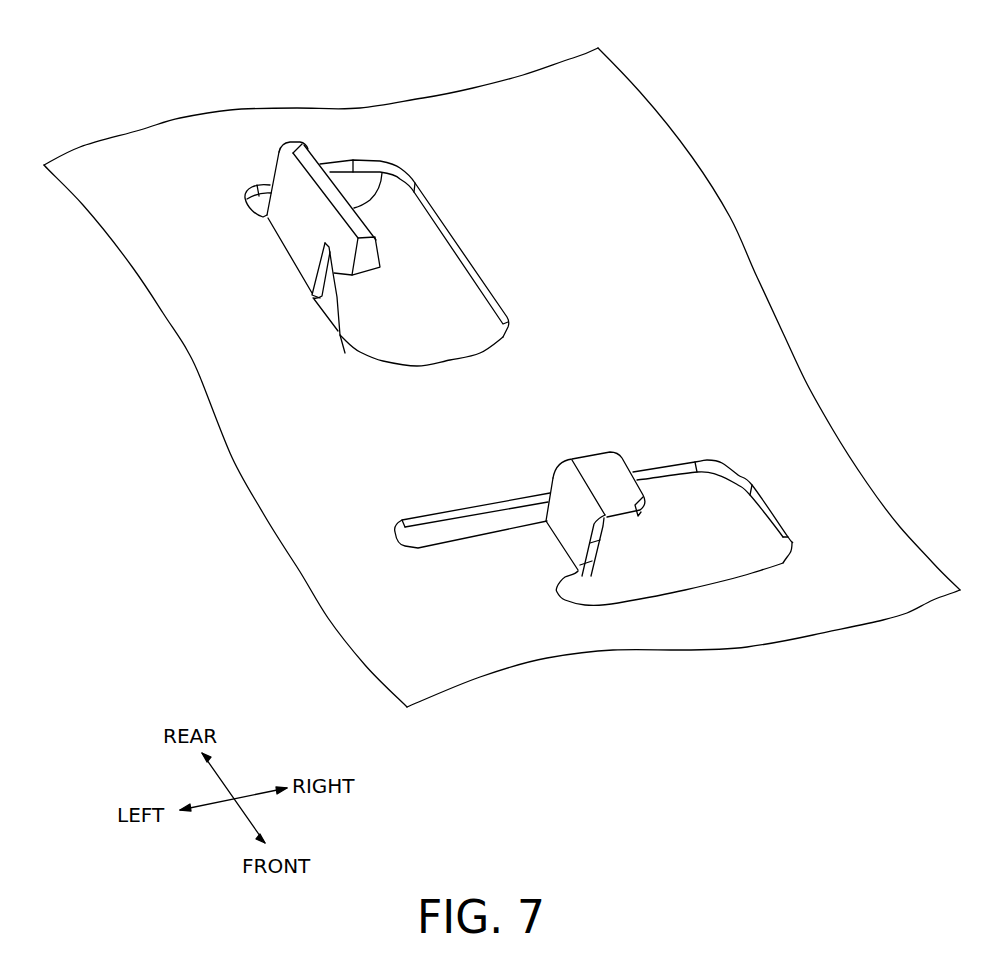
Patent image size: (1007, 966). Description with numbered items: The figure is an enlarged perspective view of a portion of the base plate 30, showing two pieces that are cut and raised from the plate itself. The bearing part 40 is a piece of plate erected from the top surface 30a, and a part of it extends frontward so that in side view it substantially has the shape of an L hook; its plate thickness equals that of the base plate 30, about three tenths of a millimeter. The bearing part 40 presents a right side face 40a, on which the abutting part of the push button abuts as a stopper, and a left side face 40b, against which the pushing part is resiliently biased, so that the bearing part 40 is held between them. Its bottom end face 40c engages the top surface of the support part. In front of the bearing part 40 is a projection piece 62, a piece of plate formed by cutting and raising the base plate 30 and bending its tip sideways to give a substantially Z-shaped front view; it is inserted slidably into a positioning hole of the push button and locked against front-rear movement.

The base plate 30 is at (502, 365).
The top surface 30a is at (595, 139).
The bearing part 40 is at (231, 196).
The right side face 40a is at (383, 161).
The left side face 40b is at (305, 230).
The bottom end face 40c is at (337, 332).
The projection piece 62 is at (566, 526).